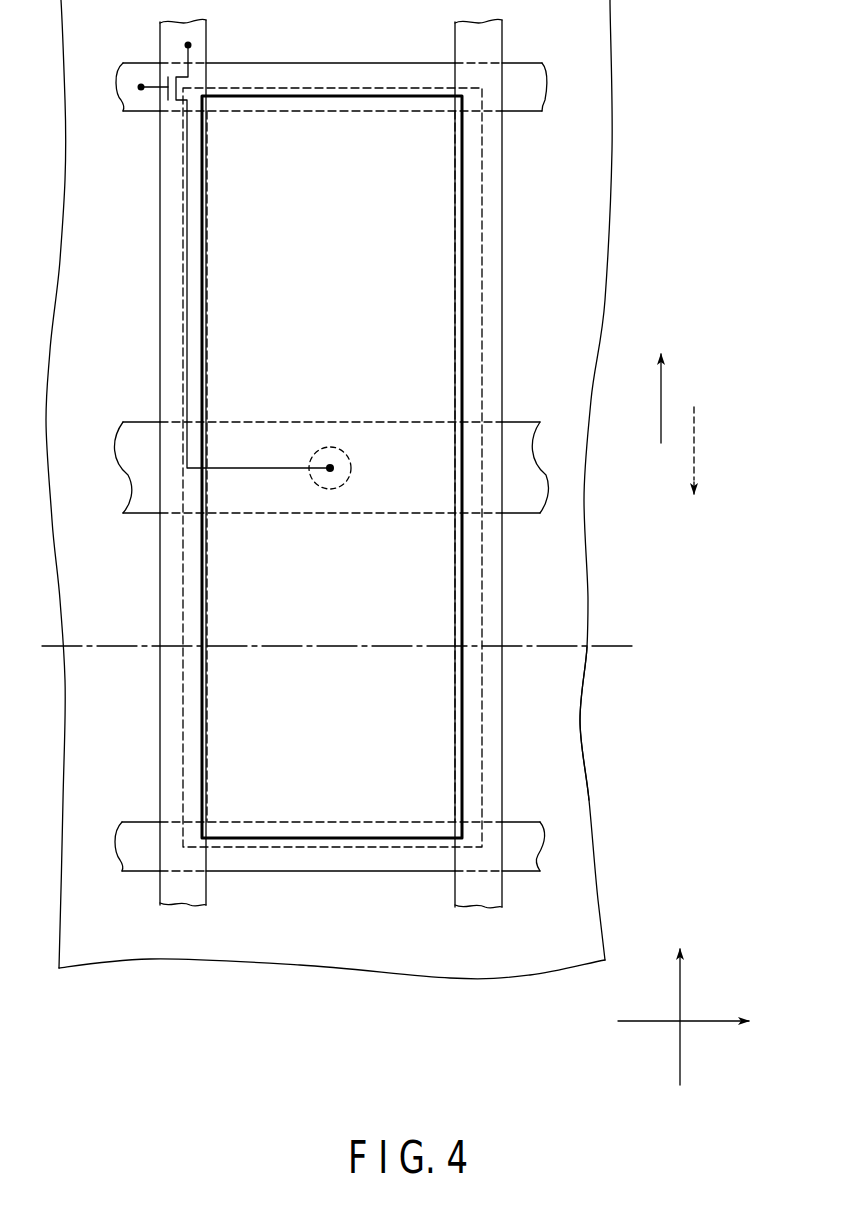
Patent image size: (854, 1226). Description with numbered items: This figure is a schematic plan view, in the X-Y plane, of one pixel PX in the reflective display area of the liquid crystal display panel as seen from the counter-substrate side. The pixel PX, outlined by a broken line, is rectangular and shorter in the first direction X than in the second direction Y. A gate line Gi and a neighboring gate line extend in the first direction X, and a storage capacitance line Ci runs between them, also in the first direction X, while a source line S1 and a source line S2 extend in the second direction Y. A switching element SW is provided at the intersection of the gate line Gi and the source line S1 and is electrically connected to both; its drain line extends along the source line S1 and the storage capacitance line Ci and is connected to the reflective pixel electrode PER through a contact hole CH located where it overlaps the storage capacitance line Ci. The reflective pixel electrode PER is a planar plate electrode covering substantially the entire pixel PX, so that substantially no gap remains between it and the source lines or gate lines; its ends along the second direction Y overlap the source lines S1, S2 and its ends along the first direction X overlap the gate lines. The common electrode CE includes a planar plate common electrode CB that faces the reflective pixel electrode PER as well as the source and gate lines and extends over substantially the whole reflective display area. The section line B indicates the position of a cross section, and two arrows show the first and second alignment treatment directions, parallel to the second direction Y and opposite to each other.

The source line S1 is at (197, 28).
The source line S2 is at (493, 37).
The gate line Gi is at (330, 72).
The storage capacitance line Ci is at (140, 480).
The switching element SW is at (179, 109).
The contact hole CH is at (328, 446).
The reflective pixel electrode PER is at (463, 188).
The pixel PX is at (484, 300).
The plate common electrode CB is at (585, 578).
The common electrode CE is at (586, 709).
The section line B- B is at (336, 649).
The first direction X is at (695, 1021).
The second direction Y is at (678, 1000).